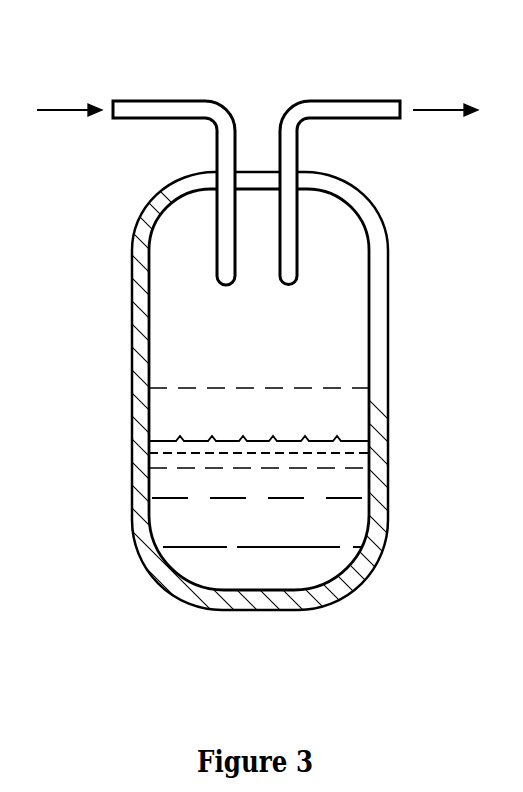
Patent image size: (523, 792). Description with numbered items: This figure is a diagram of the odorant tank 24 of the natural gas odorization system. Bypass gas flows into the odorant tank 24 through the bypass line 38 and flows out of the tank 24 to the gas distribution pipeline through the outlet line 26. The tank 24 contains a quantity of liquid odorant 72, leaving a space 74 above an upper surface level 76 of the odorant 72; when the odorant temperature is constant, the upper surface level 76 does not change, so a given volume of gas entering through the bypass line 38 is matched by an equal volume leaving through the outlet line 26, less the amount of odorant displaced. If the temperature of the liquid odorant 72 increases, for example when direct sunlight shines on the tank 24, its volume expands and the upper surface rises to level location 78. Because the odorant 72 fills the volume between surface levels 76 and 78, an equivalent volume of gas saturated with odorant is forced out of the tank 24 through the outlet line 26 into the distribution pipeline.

The odorant tank 24 is at (300, 632).
The outlet line 26 is at (360, 100).
The bypass line 38 is at (153, 100).
The liquid odorant 72 is at (188, 533).
The space 74 is at (175, 332).
The upper surface level 76 is at (228, 440).
The level location 78 is at (277, 388).